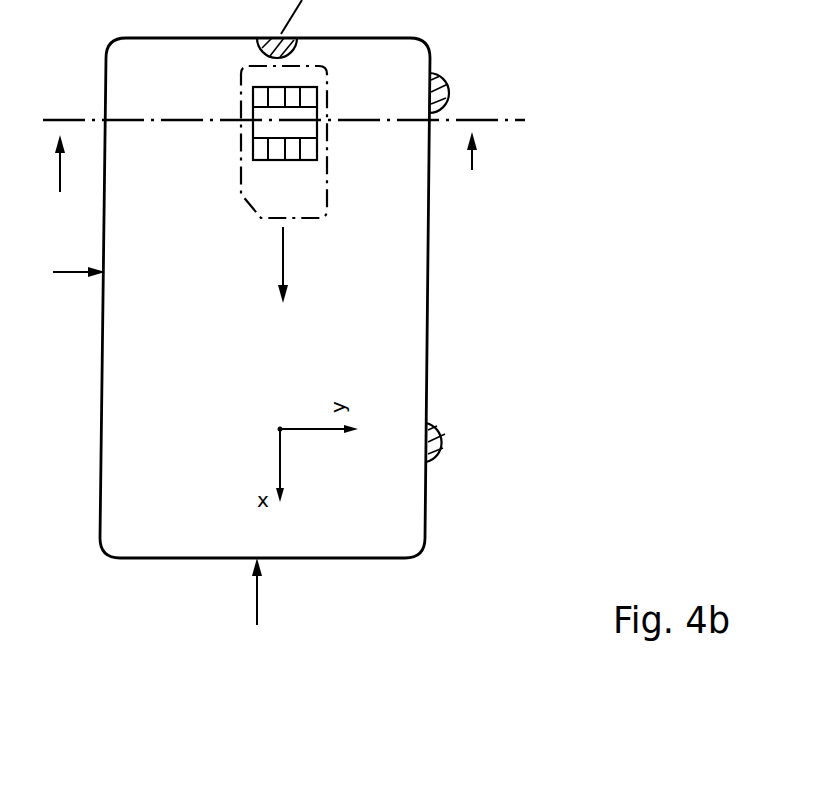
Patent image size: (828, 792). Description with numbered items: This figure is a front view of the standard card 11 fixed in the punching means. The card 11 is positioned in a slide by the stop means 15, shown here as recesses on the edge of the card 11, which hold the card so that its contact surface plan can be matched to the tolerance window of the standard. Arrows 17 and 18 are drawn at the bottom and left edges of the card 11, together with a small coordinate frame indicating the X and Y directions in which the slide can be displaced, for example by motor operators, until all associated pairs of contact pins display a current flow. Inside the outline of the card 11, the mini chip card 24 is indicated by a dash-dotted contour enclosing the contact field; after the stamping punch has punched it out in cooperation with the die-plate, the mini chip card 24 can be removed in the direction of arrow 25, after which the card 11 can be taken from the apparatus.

The card 11 is at (350, 537).
The stop means 15 is at (450, 90).
The insertion direction arrow 17 is at (257, 600).
The insertion direction arrow 18 is at (53, 272).
The mini chip card 24 is at (325, 183).
The arrow 25 is at (283, 262).